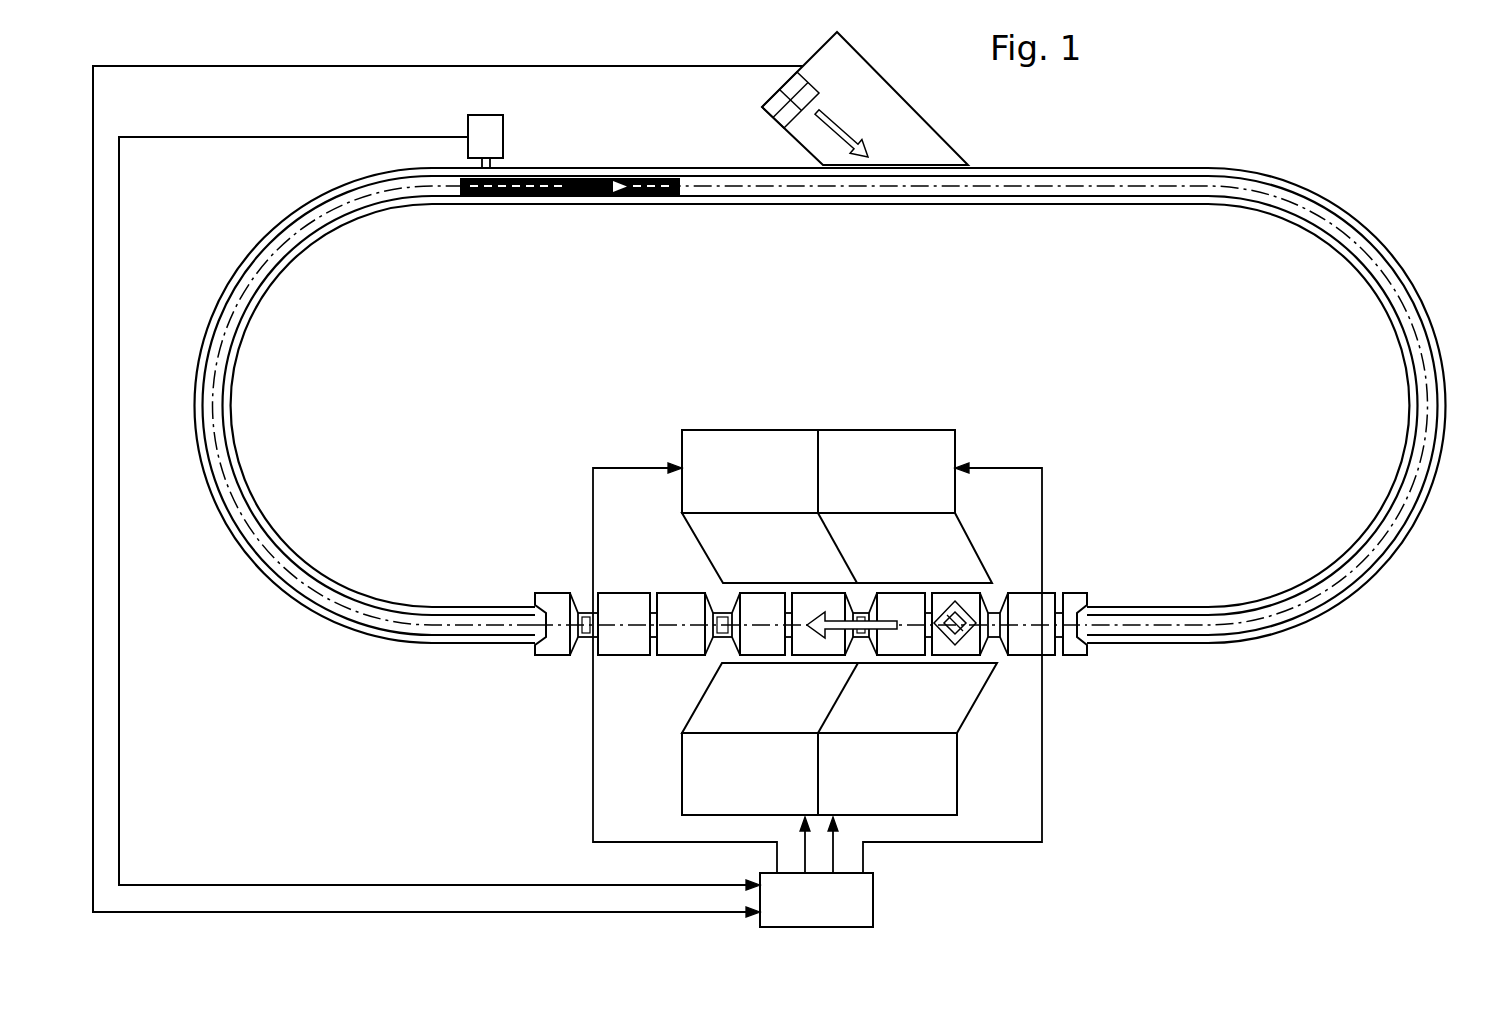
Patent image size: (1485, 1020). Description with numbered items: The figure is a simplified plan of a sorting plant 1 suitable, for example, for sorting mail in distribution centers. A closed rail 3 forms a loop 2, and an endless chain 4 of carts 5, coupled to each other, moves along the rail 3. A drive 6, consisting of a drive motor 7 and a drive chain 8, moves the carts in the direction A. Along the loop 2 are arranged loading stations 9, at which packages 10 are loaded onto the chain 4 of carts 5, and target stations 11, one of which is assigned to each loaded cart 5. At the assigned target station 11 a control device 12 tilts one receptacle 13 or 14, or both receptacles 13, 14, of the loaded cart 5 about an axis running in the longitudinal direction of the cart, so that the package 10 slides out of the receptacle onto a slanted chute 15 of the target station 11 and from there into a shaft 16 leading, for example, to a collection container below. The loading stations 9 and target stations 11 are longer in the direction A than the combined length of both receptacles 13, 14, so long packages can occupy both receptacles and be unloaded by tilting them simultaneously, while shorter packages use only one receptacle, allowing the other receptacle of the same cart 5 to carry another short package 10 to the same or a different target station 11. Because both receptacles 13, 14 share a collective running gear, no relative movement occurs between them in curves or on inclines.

The plant 1 is at (1280, 786).
The loop 2 is at (1322, 178).
The rail 3 is at (1368, 268).
The chain of carts 4 is at (503, 630).
The cart 5 is at (649, 583).
The drive 6 is at (570, 173).
The drive motor 7 is at (506, 134).
The drive chain 8 is at (540, 198).
The loading station 9 is at (872, 85).
The package 10 is at (763, 107).
The target station 11 is at (817, 617).
The control device 12 is at (853, 903).
The receptacle 13 is at (630, 643).
The receptacle 14 is at (683, 643).
The slanted chute 15 is at (933, 535).
The shaft 16 is at (935, 455).
The direction A is at (620, 193).